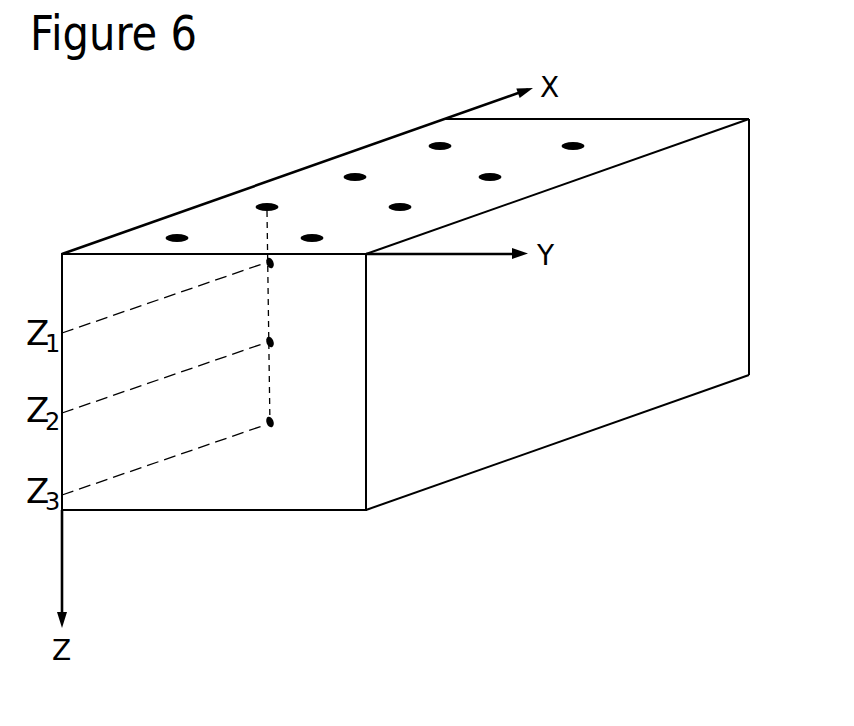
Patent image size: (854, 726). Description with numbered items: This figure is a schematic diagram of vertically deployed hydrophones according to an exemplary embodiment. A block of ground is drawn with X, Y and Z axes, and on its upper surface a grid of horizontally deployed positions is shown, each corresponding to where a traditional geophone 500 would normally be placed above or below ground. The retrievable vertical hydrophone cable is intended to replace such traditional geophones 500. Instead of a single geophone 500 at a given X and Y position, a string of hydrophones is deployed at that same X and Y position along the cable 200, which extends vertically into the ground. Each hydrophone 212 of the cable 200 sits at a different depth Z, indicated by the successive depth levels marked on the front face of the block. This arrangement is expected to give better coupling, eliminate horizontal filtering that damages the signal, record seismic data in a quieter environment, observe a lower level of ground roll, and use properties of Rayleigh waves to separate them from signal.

The geophone 500 is at (268, 201).
The hydrophone 212 is at (272, 262).
The cable 200 is at (282, 332).